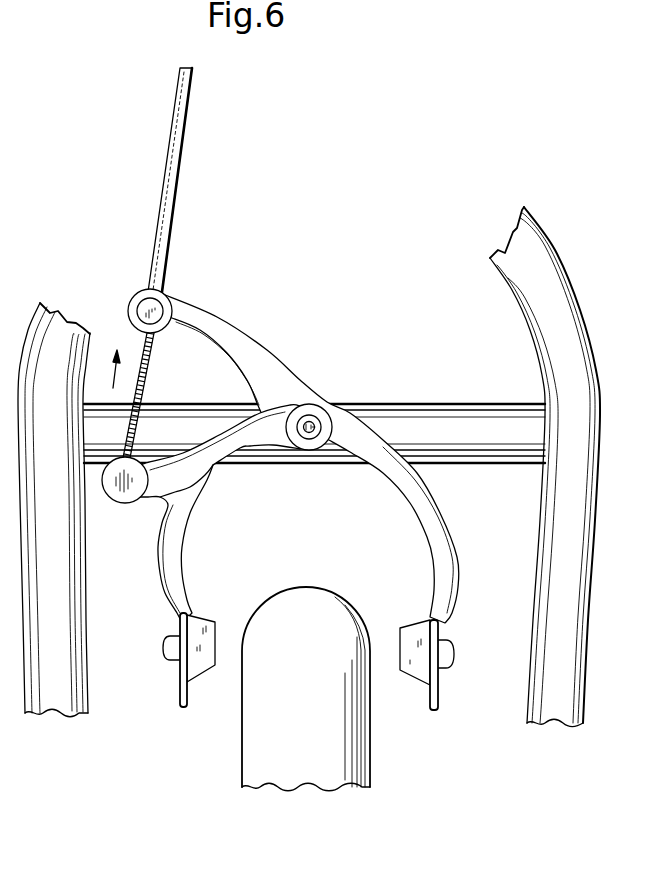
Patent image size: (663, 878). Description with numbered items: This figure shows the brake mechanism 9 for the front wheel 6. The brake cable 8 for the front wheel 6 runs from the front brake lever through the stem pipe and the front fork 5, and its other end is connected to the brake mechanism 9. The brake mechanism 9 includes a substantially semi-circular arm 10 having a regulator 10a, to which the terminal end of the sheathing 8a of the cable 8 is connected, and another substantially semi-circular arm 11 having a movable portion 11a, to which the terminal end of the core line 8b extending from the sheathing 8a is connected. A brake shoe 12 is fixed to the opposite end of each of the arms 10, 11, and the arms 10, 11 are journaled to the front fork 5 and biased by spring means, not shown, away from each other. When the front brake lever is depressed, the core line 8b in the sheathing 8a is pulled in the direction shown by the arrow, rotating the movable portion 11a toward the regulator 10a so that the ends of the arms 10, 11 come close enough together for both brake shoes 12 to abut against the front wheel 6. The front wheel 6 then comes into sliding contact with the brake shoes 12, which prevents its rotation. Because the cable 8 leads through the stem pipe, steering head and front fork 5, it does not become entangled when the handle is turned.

The front fork 5 is at (578, 285).
The front wheel 6 is at (351, 761).
The brake cable 8 is at (162, 180).
The sheathing 8a is at (173, 228).
The core line 8b is at (147, 366).
The brake mechanism 9 is at (351, 284).
The arm 10 is at (185, 553).
The regulator 10a is at (140, 305).
The arm 11 is at (421, 535).
The movable portion 11a is at (127, 497).
The brake shoes 12 is at (202, 668).